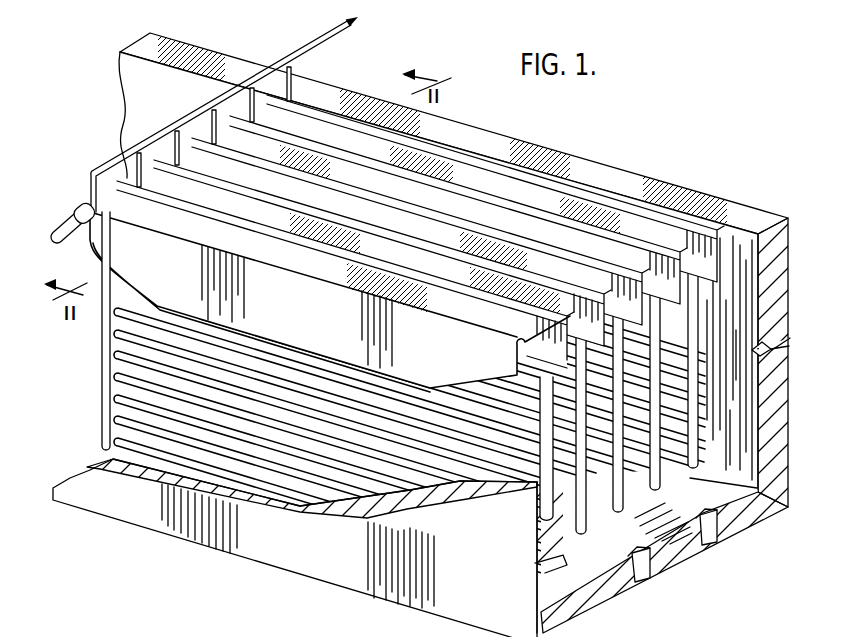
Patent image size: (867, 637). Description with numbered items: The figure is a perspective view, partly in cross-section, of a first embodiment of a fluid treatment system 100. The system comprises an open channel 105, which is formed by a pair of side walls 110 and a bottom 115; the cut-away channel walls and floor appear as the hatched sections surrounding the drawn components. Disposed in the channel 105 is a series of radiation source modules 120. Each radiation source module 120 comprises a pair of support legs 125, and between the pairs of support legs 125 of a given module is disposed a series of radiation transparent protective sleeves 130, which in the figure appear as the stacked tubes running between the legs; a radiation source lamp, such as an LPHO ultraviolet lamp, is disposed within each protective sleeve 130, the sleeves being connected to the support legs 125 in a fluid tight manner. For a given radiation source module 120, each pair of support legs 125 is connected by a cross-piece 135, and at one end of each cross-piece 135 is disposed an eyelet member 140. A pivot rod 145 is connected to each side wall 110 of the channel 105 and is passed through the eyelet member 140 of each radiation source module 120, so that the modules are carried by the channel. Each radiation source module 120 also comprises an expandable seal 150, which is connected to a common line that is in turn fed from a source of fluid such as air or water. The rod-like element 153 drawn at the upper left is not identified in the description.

The fluid treatment system 100 is at (596, 145).
The open channel 105 is at (733, 250).
The side walls 110 is at (795, 222).
The bottom 115 is at (687, 550).
The radiation source module 120 is at (153, 186).
The support legs 125 is at (583, 531).
The radiation transparent protective sleeves 130 is at (114, 373).
The cross-piece 135 is at (596, 268).
The eyelet member 140 is at (77, 208).
The pivot rod 145 is at (55, 230).
The expandable seal 150 is at (102, 270).
The support rod 153 is at (290, 43).